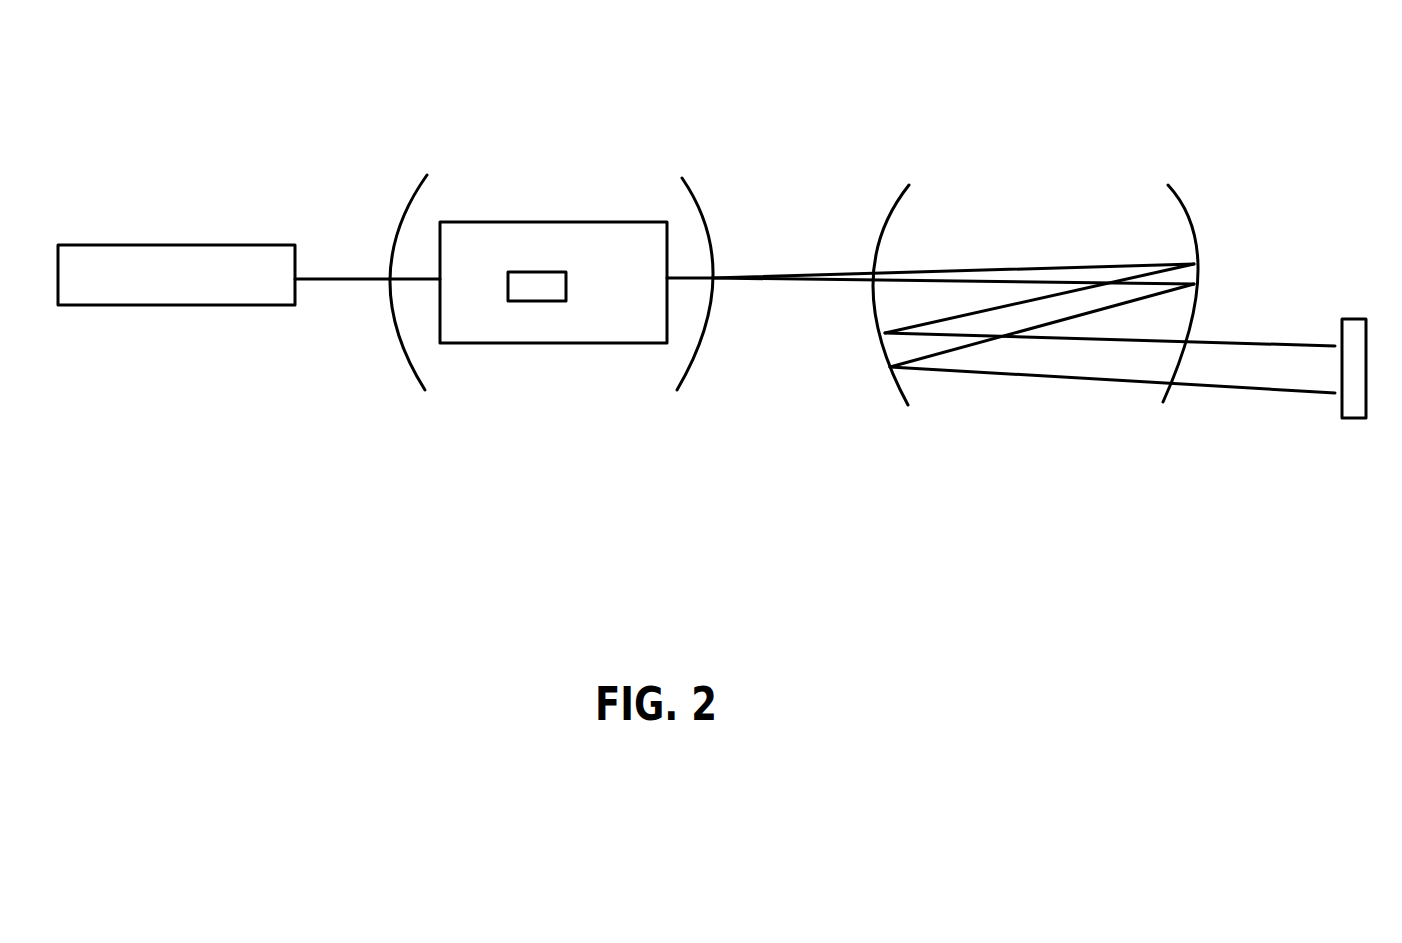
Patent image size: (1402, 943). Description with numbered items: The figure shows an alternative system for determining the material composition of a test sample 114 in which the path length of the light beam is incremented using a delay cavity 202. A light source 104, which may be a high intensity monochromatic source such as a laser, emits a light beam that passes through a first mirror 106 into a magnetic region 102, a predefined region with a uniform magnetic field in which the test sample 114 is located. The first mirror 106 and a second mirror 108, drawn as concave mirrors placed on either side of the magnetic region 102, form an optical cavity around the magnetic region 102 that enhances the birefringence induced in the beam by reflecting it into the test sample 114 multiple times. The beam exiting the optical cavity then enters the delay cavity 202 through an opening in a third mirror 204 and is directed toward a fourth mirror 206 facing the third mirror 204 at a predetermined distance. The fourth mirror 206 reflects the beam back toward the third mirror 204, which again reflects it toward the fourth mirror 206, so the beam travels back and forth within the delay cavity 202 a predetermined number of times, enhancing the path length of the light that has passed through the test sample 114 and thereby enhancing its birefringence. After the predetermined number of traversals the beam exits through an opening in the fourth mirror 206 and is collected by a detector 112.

The magnetic region 102 is at (535, 222).
The light source 104 is at (155, 305).
The first mirror 106 is at (413, 375).
The second mirror 108 is at (686, 385).
The detector 112 is at (1348, 412).
The test sample 114 is at (543, 301).
The delay cavity 202 is at (1038, 402).
The third mirror 204 is at (898, 173).
The fourth mirror 206 is at (1183, 195).